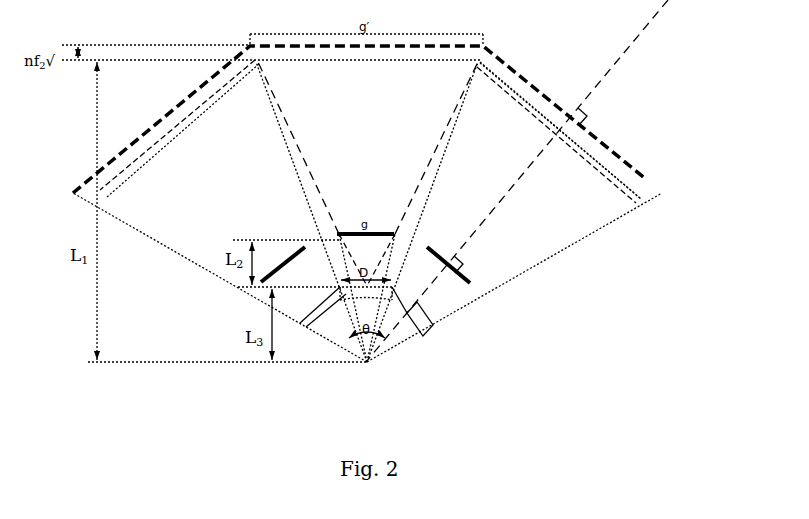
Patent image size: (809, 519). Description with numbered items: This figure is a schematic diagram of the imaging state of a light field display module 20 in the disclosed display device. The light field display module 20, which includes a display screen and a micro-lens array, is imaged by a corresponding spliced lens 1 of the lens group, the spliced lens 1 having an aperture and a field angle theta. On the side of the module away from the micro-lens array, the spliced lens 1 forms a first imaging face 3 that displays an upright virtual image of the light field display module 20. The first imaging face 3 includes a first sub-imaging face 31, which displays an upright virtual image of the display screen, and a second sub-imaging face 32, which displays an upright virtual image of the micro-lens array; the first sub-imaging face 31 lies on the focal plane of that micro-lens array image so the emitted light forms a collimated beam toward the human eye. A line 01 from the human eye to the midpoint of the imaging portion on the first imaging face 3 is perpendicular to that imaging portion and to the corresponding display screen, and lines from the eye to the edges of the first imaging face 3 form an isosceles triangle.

The line 01 is at (632, 50).
The spliced lens 1 is at (423, 336).
The first imaging face 3 is at (429, 124).
The first sub-imaging face 31 is at (645, 175).
The second sub-imaging face 32 is at (641, 192).
The light field display module 20 is at (474, 270).